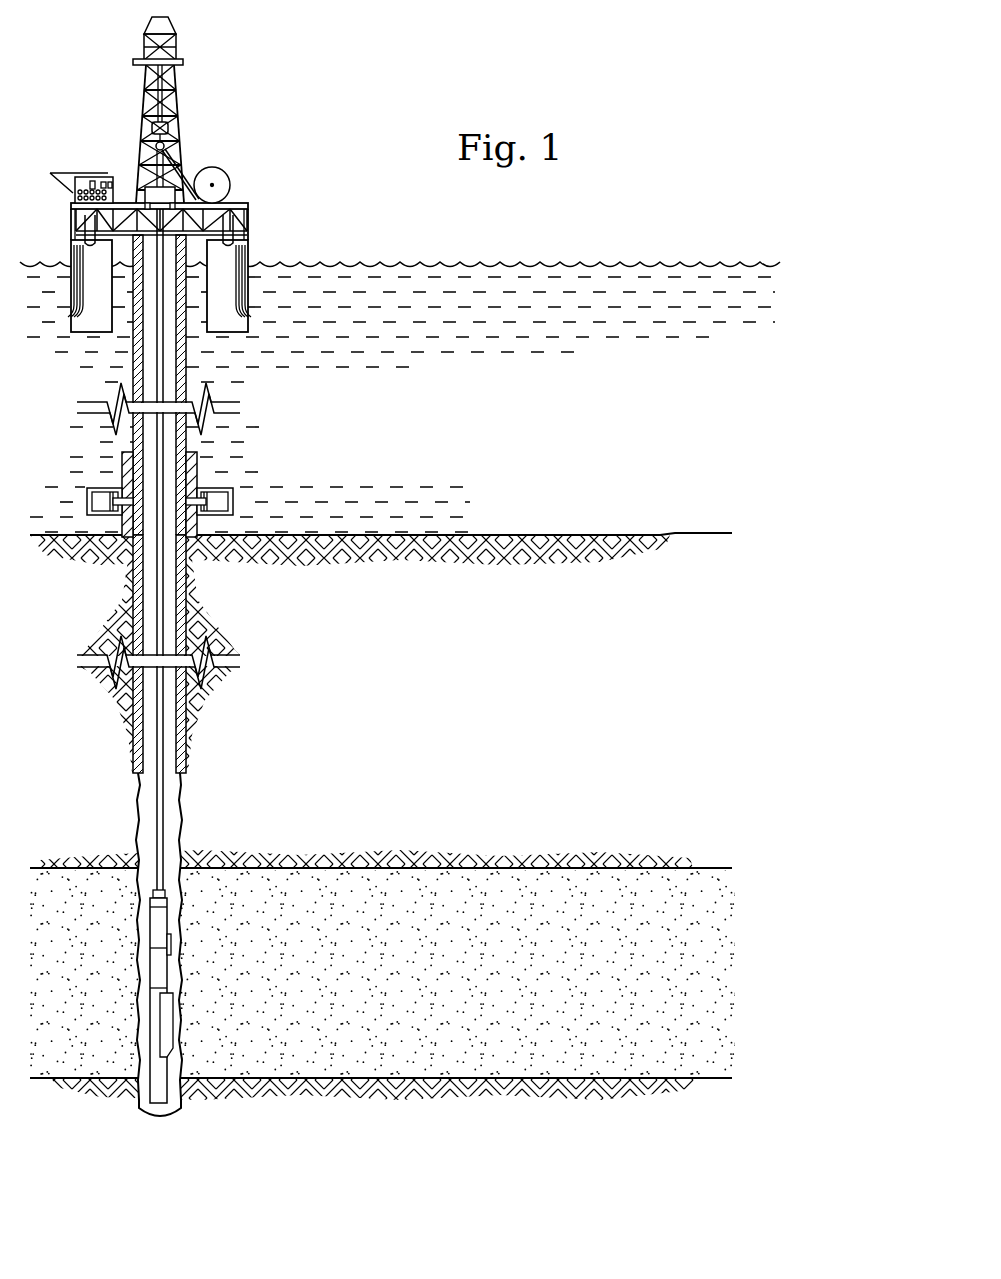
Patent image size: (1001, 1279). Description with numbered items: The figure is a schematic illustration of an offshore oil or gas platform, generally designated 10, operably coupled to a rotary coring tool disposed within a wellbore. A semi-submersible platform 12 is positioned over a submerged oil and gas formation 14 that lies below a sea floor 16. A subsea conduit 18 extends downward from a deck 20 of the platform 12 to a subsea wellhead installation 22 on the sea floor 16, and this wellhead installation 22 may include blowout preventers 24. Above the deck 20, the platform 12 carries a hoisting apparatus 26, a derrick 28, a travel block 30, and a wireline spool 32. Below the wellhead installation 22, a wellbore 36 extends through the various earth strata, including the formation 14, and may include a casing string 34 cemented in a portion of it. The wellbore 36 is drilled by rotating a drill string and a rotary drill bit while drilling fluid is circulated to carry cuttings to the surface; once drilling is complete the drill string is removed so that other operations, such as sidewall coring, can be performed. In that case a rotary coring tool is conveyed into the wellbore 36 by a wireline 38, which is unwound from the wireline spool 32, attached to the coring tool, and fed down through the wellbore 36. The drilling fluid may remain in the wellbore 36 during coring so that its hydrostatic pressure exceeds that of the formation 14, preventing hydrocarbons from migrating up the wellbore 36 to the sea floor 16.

The offshore oil or gas platform 10 is at (182, 174).
The semi-submersible platform 12 is at (248, 201).
The oil and gas formation 14 is at (385, 988).
The sea floor 16 is at (483, 535).
The subsea conduit 18 is at (187, 364).
The deck 20 is at (254, 234).
The subsea wellhead installation 22 is at (118, 472).
The blowout preventers 24 is at (218, 498).
The hoisting apparatus 26 is at (148, 190).
The derrick 28 is at (144, 44).
The travel block 30 is at (149, 128).
The wireline spool 32 is at (214, 172).
The casing string 34 is at (180, 768).
The wellbore 36 is at (183, 822).
The wireline 38 is at (155, 787).